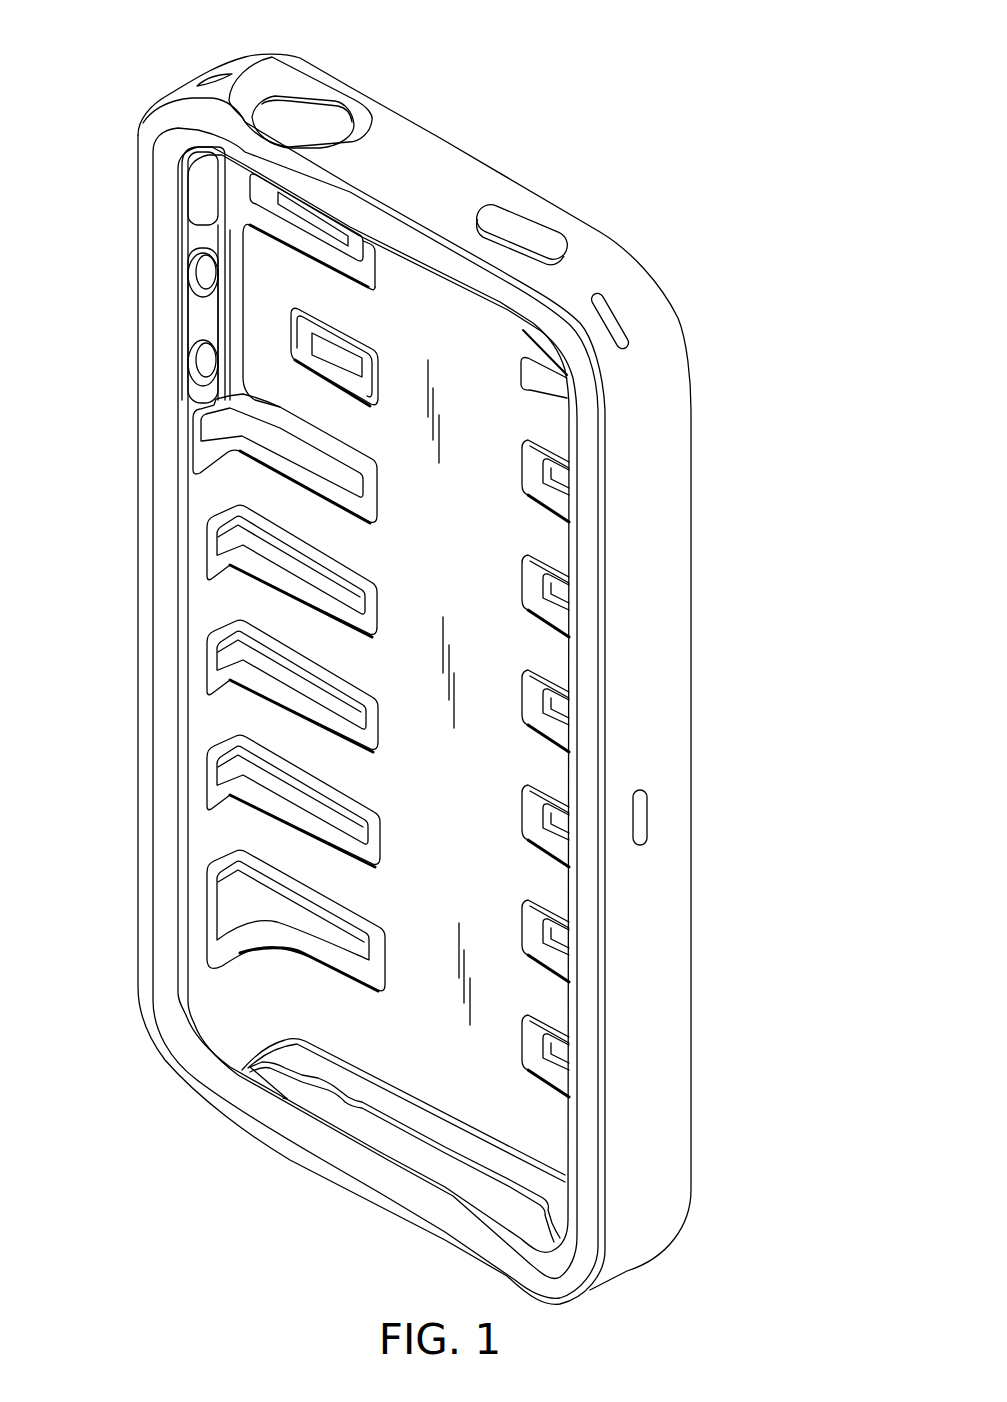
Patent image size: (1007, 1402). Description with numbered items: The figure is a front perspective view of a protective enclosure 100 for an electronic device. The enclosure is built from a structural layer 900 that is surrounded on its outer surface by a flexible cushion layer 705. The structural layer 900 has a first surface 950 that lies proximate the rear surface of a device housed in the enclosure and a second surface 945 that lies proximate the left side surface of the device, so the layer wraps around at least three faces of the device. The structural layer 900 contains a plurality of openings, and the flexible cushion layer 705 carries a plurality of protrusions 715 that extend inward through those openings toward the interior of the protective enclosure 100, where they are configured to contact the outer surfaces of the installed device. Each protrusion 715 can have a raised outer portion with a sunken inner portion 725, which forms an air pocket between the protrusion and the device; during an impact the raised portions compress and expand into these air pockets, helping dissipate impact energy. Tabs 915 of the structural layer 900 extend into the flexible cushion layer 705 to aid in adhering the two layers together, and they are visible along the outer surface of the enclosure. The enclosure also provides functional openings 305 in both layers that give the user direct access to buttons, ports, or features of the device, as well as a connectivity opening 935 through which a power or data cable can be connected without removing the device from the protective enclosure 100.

The protective enclosure 100 is at (688, 128).
The functional openings 305 is at (293, 122).
The flexible cushion layer 705 is at (662, 648).
The protrusions 715 is at (533, 580).
The sunken inner portion 725 is at (337, 348).
The structural layer 900 is at (440, 572).
The tabs 915 is at (610, 320).
The connectivity opening 935 is at (423, 1160).
The second surface 945 is at (212, 603).
The first surface 950 is at (453, 812).